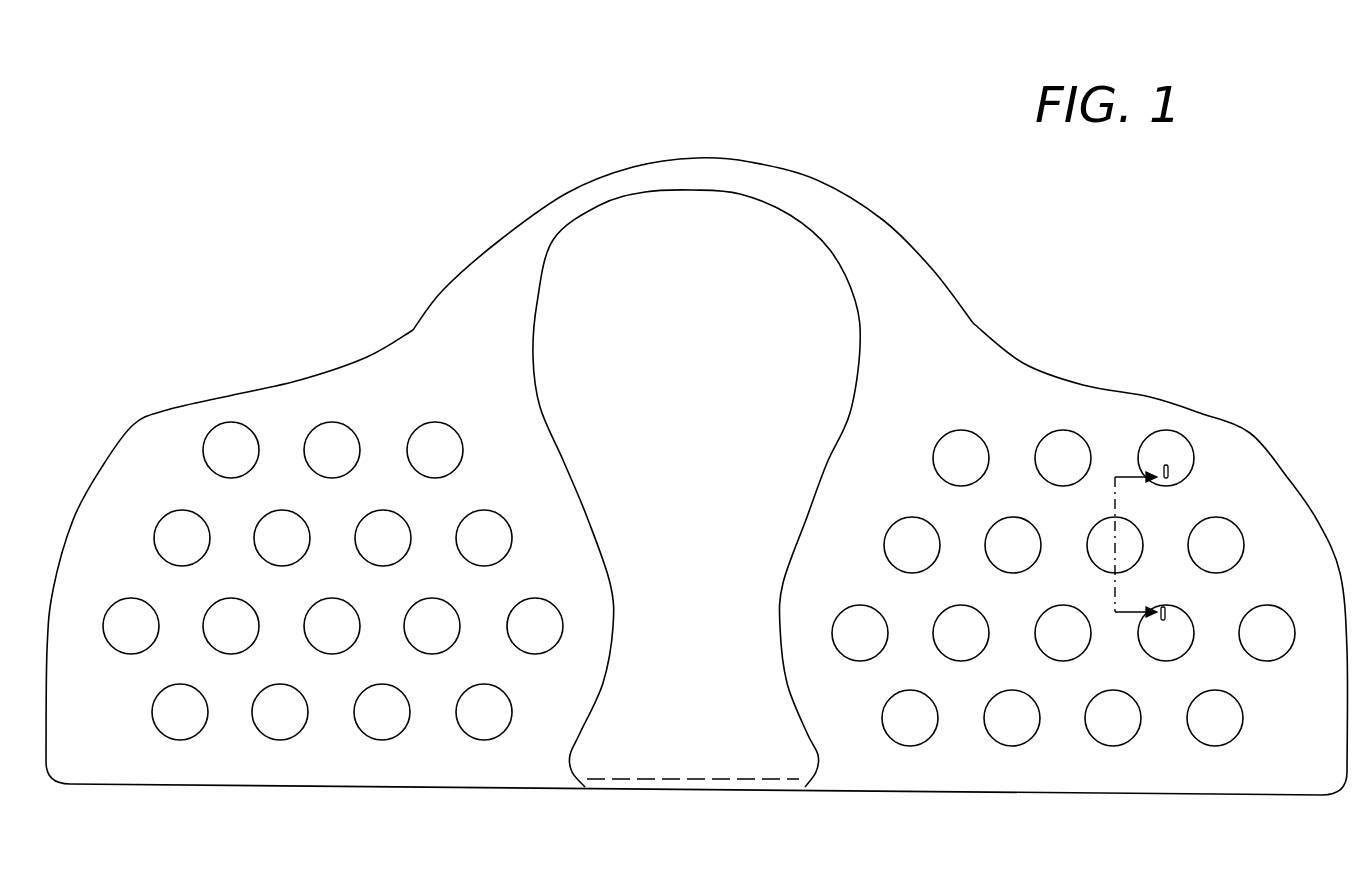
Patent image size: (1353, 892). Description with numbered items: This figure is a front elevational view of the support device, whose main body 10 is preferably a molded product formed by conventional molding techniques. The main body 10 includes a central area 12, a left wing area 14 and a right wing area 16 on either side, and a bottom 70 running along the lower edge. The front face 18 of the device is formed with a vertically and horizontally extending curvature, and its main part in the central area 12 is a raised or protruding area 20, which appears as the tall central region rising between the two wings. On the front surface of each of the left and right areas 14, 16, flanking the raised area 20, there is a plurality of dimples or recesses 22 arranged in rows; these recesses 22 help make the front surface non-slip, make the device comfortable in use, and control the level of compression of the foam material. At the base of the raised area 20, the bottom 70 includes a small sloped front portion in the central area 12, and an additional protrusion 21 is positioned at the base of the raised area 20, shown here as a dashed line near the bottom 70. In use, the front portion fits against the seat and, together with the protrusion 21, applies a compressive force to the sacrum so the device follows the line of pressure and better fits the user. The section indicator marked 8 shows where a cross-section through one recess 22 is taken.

The main body of the support device 10 is at (425, 129).
The central area 12 is at (698, 156).
The left end or wing area 14 is at (160, 414).
The right end or wing area 16 is at (1257, 434).
The front face 18 is at (496, 339).
The raised or protruding area 20 is at (740, 376).
The additional protrusion 21 is at (693, 785).
The dimples or recesses 22 is at (463, 446).
The bottom 70 is at (450, 792).
The section line 8- 8 is at (1145, 547).